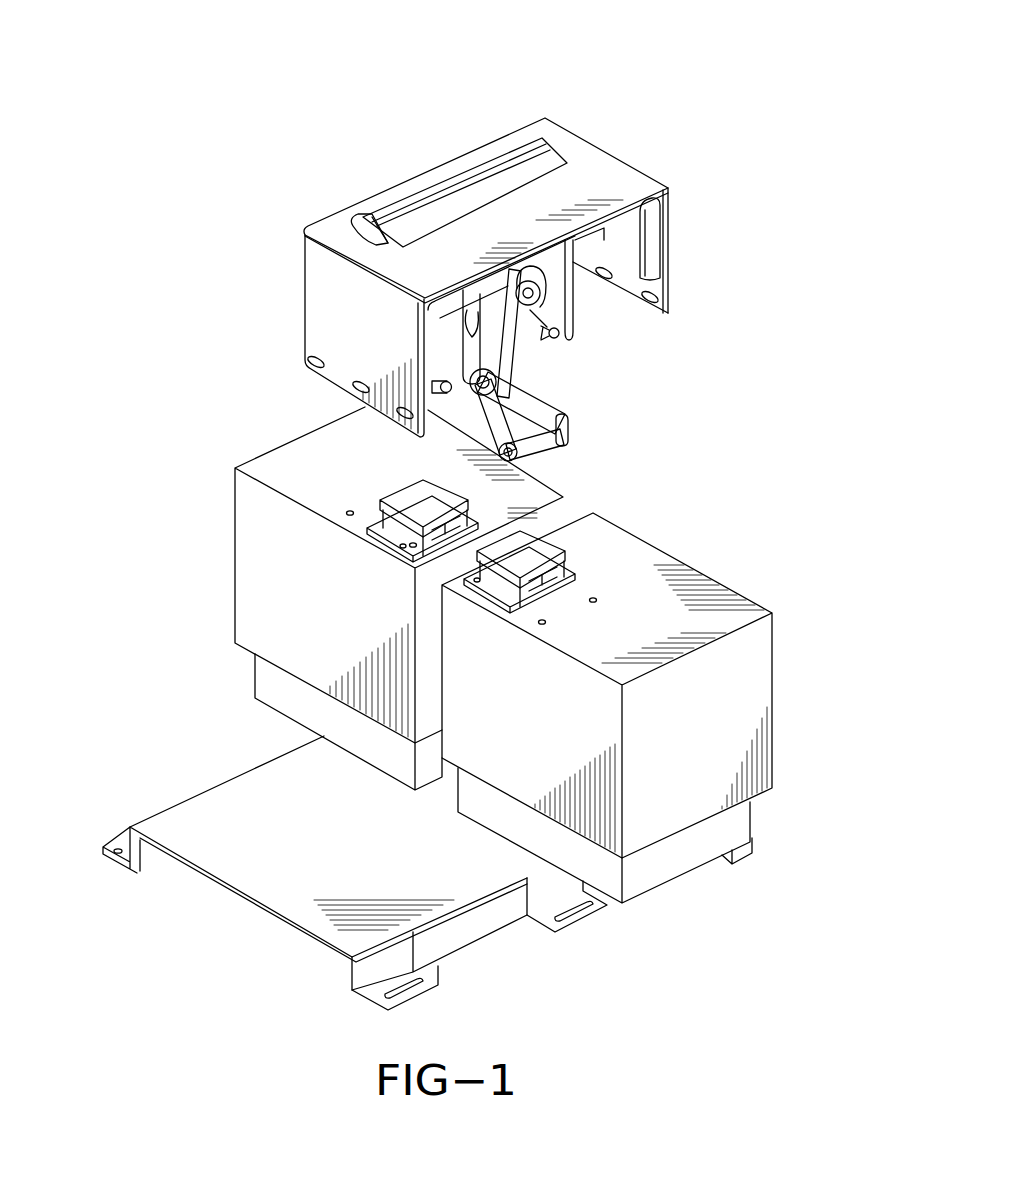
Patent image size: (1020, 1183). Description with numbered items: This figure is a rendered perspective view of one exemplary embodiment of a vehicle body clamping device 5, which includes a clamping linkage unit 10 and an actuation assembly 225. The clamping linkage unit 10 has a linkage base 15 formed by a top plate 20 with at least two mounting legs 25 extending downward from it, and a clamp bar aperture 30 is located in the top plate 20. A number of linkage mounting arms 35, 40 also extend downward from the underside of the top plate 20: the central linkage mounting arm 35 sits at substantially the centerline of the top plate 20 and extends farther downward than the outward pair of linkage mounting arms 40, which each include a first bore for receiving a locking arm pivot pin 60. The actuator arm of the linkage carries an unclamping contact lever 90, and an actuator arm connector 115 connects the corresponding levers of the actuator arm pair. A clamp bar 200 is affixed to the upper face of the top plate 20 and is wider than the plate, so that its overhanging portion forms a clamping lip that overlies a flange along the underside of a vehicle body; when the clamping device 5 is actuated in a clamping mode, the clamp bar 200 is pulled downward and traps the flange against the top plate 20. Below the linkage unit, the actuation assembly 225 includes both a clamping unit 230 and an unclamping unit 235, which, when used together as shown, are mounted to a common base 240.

The vehicle body clamping device 5 is at (188, 183).
The clamping linkage unit 10 is at (642, 110).
The linkage base 15 is at (278, 282).
The top plate 20 is at (632, 182).
The mounting legs 25 is at (668, 257).
The clamp bar aperture 30 is at (360, 218).
The central linkage mounting arm 35 is at (516, 368).
The outward linkage mounting arms 40 is at (447, 340).
The locking arm pivot pin 60 is at (558, 318).
The unclamping contact lever 90 is at (566, 429).
The actuator arm connector 115 is at (533, 445).
The clamp bar 200 is at (475, 175).
The actuation assembly 225 is at (683, 490).
The clamping unit 230 is at (213, 529).
The unclamping unit 235 is at (783, 666).
The common base 240 is at (490, 960).